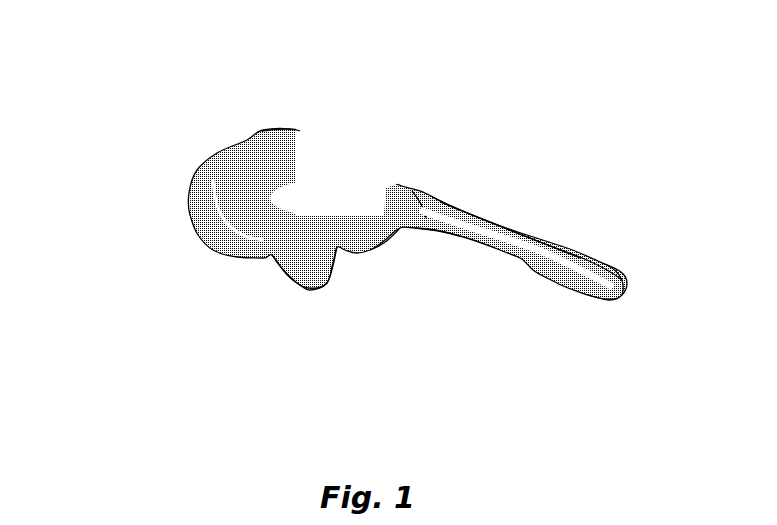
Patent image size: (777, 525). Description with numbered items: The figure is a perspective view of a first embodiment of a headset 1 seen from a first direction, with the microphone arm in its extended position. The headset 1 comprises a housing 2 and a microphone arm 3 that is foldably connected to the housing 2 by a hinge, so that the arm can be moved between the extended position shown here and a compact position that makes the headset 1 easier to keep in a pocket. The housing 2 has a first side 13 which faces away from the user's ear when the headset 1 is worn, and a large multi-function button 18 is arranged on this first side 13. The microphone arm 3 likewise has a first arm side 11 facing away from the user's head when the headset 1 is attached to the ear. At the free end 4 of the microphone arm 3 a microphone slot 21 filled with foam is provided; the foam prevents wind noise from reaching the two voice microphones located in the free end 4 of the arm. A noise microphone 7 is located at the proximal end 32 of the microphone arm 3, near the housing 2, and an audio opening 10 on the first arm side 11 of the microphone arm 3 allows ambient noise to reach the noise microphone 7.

The headset 1 is at (128, 300).
The housing 2 is at (262, 130).
The multi-function button 18 is at (305, 130).
The noise microphone 7 is at (420, 193).
The microphone arm 3 is at (497, 210).
The first arm side 11 is at (530, 240).
The free end 4 is at (620, 296).
The slot 21 is at (582, 299).
The first side 13 is at (283, 268).
The proximal end 32 is at (407, 228).
The audio opening 10 is at (422, 228).